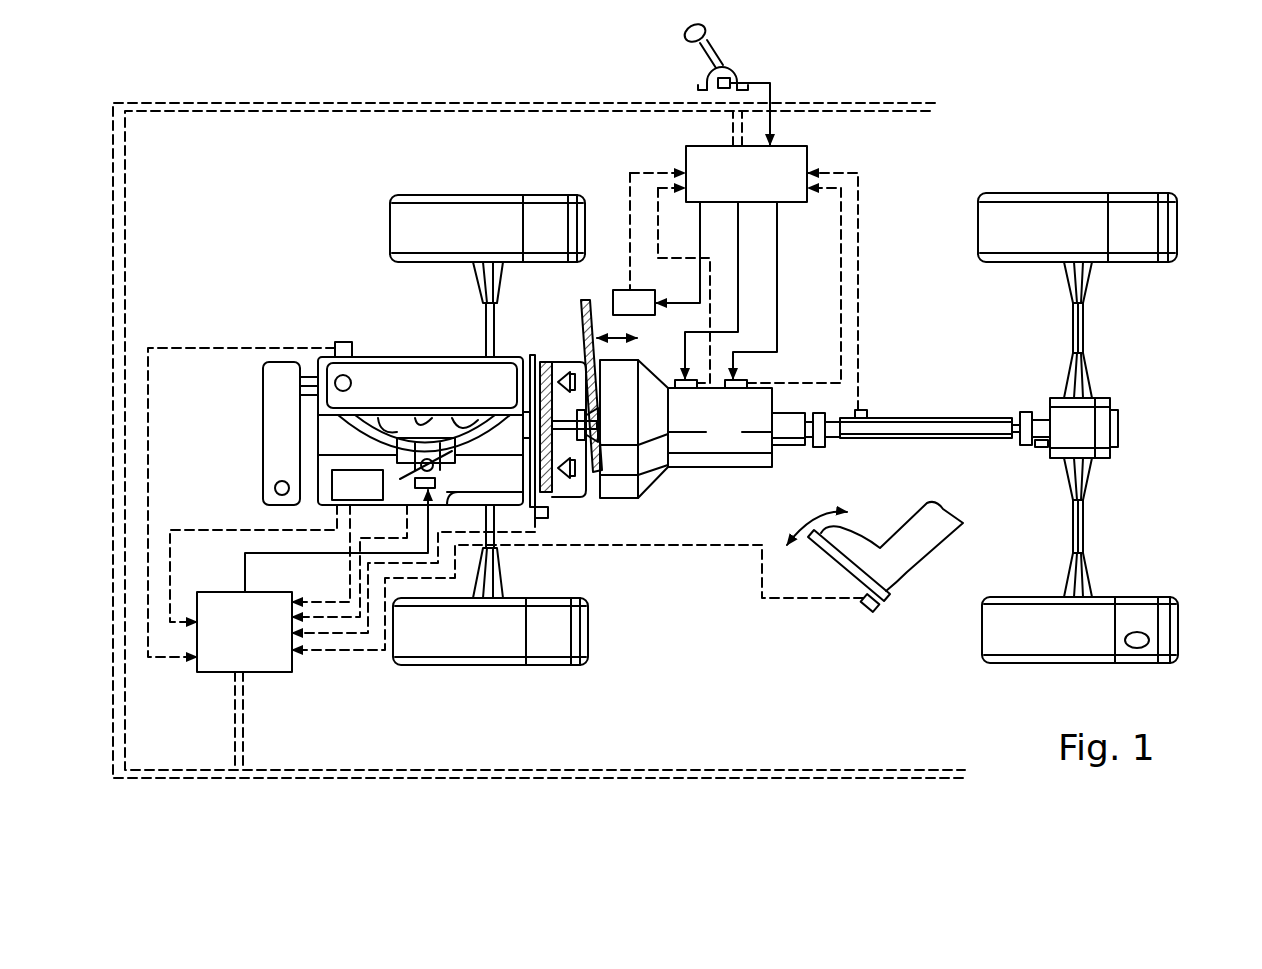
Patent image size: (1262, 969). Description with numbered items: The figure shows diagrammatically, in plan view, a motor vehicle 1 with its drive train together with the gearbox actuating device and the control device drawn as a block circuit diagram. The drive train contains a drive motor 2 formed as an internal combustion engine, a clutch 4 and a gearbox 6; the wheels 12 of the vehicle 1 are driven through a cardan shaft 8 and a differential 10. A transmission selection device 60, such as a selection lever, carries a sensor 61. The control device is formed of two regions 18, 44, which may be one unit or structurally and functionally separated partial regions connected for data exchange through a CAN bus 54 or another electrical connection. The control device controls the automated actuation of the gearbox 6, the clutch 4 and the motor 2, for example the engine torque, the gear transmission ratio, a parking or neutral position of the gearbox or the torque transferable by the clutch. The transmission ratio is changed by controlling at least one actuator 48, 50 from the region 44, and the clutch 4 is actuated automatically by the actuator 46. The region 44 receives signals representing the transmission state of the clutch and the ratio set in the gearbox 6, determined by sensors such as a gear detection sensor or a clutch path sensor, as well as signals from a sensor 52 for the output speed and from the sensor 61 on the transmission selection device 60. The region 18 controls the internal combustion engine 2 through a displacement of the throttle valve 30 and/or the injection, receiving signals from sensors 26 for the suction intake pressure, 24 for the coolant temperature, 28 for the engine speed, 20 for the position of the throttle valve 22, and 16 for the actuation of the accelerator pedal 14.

The motor vehicle 1 is at (743, 650).
The drive motor 2 is at (435, 376).
The clutch 4 is at (558, 350).
The gearbox 6 is at (732, 445).
The cardan shaft 8 is at (972, 428).
The differential 10 is at (1103, 423).
The wheels 12 is at (1148, 228).
The accelerator pedal 14 is at (889, 531).
The accelerator pedal sensor 16 is at (878, 611).
The engine control region 18 is at (258, 645).
The throttle valve position sensor 20 is at (412, 493).
The throttle valve 22 is at (424, 459).
The coolant temperature sensor 24 is at (370, 497).
The suction intake pressure sensor 26 is at (340, 342).
The engine speed sensor 28 is at (550, 512).
The throttle valve displacement 30 is at (443, 494).
The gearbox control region 44 is at (760, 185).
The clutch actuator 46 is at (647, 313).
The gearbox actuator 48 is at (677, 378).
The gearbox actuator 50 is at (747, 379).
The output speed sensor 52 is at (866, 409).
The CAN bus 54 is at (425, 770).
The transmission selection device 60 is at (686, 40).
The selection lever sensor 61 is at (726, 75).